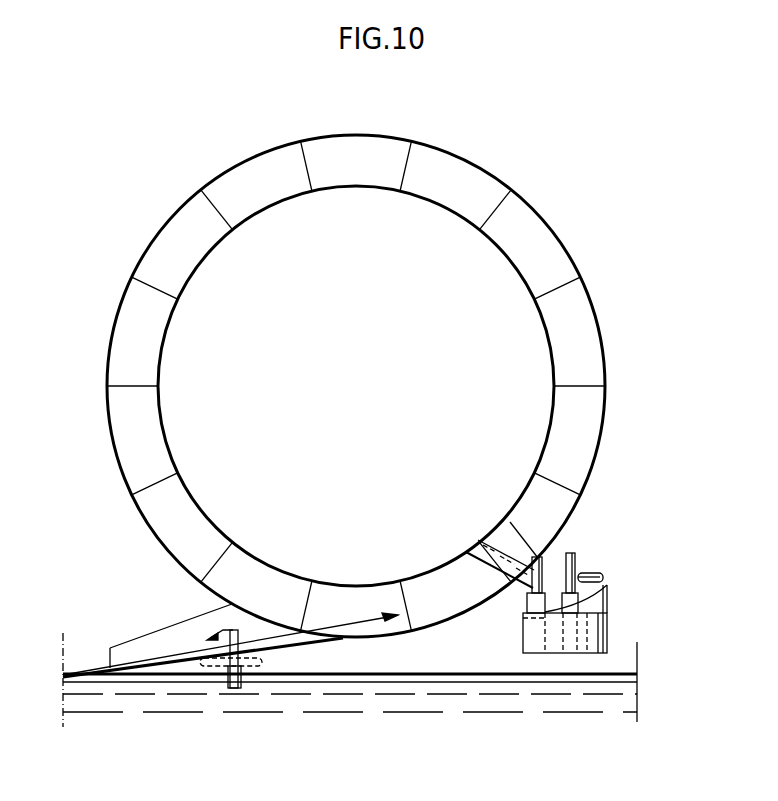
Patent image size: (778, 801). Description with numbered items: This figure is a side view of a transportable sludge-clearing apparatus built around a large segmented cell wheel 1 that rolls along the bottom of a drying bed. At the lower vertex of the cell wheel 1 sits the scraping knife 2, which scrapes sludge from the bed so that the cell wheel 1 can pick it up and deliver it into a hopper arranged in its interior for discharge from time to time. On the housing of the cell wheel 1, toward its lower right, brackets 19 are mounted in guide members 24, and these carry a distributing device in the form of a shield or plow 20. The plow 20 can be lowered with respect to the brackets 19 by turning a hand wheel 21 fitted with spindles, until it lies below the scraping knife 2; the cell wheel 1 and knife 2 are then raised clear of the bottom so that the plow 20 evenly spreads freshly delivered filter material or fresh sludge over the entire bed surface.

The cell wheel 1 is at (356, 386).
The scraping knife 2 is at (175, 650).
The brackets 19 is at (555, 550).
The shield or plow 20 is at (593, 628).
The hand wheel 21 is at (603, 578).
The guide members 24 is at (578, 570).